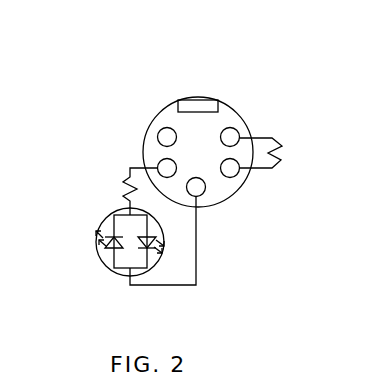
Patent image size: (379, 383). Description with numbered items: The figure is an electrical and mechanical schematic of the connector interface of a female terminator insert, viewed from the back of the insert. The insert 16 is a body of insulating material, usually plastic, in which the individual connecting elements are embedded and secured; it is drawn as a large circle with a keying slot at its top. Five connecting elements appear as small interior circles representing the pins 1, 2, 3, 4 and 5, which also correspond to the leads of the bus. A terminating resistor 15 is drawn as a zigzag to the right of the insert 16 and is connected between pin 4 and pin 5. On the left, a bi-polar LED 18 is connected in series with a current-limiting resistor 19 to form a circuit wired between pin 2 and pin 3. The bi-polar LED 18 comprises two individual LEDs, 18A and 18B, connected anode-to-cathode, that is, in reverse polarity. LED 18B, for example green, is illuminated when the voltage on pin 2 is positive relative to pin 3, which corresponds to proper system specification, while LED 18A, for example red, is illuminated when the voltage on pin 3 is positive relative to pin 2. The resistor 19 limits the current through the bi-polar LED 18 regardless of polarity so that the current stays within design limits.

The pin 1 is at (158, 125).
The pin 2 is at (155, 162).
The pin 3 is at (210, 191).
The pin 4 is at (246, 175).
The pin 5 is at (237, 125).
The terminating resistor 15 is at (285, 149).
The insert 16 is at (200, 98).
The bi-polar LED 18 is at (140, 260).
The LED 18A is at (102, 235).
The LED 18B is at (165, 243).
The current-limiting resistor 19 is at (110, 188).